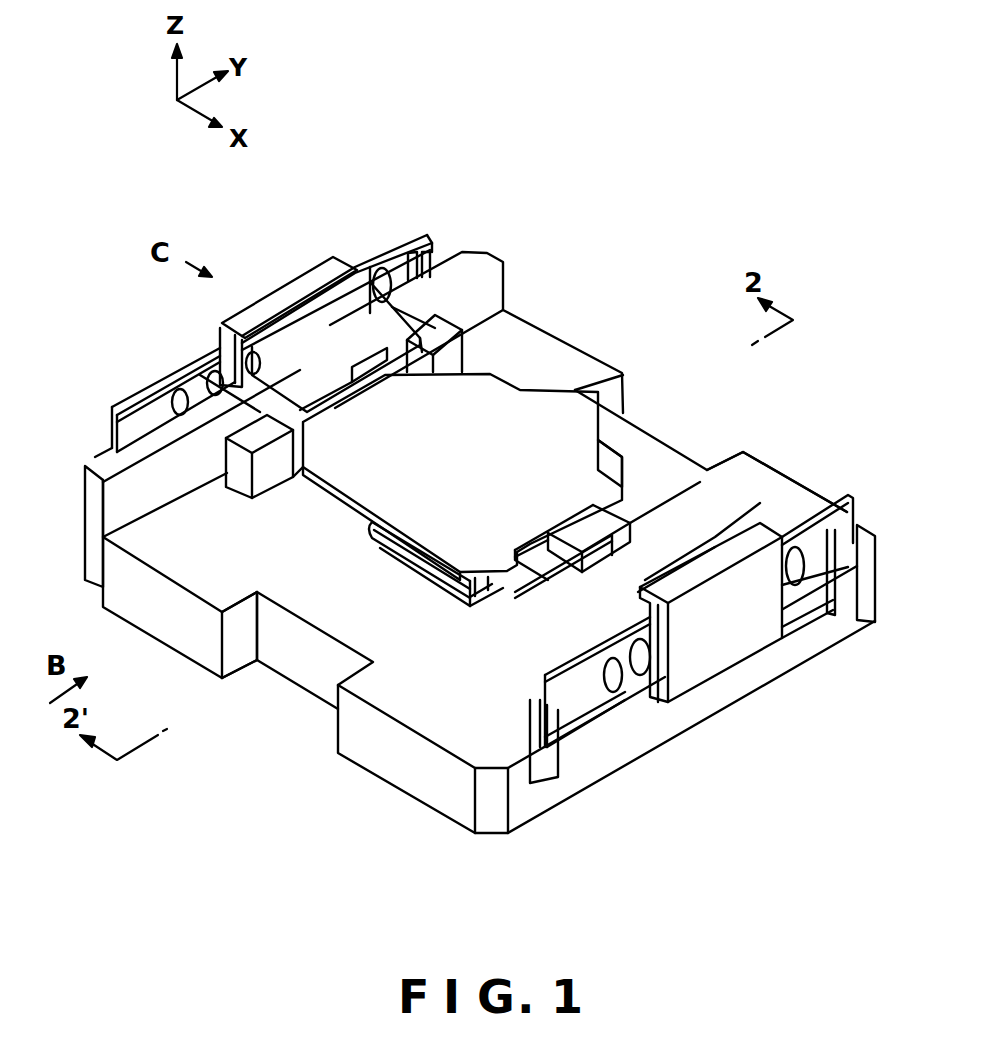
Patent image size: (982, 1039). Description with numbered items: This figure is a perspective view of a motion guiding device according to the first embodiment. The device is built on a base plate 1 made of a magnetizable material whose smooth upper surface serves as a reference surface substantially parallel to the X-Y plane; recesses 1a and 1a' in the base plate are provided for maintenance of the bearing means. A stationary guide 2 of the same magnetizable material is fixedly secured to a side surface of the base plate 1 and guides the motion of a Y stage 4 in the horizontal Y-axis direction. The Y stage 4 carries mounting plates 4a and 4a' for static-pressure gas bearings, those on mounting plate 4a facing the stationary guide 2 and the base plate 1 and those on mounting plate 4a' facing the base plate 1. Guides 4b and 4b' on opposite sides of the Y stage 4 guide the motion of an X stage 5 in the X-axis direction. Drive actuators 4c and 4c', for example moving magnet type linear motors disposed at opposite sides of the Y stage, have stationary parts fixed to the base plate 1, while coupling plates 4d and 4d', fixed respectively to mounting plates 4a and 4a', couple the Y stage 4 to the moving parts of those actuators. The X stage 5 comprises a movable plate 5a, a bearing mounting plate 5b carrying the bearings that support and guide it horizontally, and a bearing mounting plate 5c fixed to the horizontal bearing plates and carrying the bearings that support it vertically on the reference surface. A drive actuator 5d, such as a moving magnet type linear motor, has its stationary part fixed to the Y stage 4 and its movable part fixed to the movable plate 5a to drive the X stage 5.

The base plate 1 is at (405, 778).
The recess 1a is at (244, 659).
The recess 1a' is at (777, 454).
The stationary guide 2 is at (490, 250).
The Y stage 4 is at (655, 502).
The mounting plate 4a is at (272, 343).
The mounting plate 4a' is at (691, 616).
The guide 4b is at (413, 362).
The guide 4b' is at (255, 454).
The drive actuator 4c is at (288, 303).
The drive actuator 4c' is at (714, 636).
The coupling plate 4d is at (337, 306).
The coupling plate 4d' is at (537, 552).
The X stage 5 is at (548, 410).
The movable plate 5a is at (318, 500).
The bearing mounting plate 5b is at (377, 553).
The bearing mounting plate 5c is at (435, 587).
The drive actuator 5d is at (630, 513).